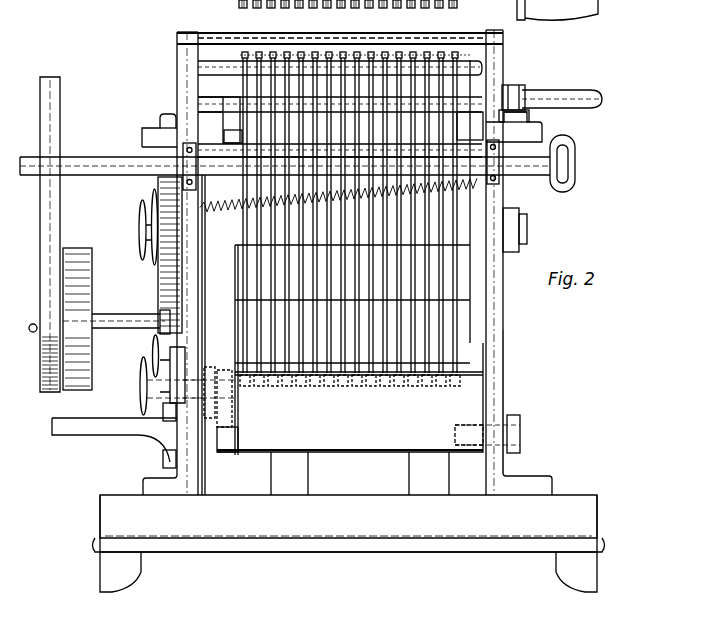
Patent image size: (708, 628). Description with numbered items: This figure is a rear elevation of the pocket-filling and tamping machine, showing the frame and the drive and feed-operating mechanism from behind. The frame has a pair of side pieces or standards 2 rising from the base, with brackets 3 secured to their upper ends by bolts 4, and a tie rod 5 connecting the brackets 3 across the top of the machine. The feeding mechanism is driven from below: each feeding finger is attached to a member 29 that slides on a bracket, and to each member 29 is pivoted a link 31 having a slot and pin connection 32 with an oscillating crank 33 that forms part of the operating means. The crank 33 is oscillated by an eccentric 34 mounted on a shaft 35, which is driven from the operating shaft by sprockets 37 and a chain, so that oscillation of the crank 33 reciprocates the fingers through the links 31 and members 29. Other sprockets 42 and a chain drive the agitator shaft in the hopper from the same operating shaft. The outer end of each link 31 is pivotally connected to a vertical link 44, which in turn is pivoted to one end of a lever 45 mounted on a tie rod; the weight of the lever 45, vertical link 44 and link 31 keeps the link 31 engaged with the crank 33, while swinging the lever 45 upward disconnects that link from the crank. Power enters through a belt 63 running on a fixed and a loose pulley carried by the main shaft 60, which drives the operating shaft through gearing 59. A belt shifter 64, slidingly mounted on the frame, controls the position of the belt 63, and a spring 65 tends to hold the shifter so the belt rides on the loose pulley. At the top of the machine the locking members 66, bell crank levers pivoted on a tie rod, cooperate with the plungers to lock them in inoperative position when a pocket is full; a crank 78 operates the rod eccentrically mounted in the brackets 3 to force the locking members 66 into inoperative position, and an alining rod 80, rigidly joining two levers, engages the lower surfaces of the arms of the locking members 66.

The side pieces or standards 2 is at (349, 476).
The brackets 3 is at (347, 262).
The bolts 4 is at (160, 116).
The tie rod 5 is at (300, 40).
The member 29 is at (220, 120).
The link 31 is at (504, 342).
The slot and pin connection 32 is at (216, 335).
The oscillating crank 33 is at (359, 273).
The eccentric 34 is at (210, 391).
The shaft 35 is at (142, 440).
The sprockets 37 is at (138, 230).
The sprockets 42 is at (158, 272).
The vertical link 44 is at (337, 8).
The lever 45 is at (478, 52).
The gearing 59 is at (116, 311).
The main shaft 60 is at (90, 319).
The belt 63 is at (59, 234).
The belt shifter 64 is at (102, 158).
The spring 65 is at (539, 193).
The locking members 66 is at (508, 86).
The crank 78 is at (566, 54).
The alining rod 80 is at (548, 124).